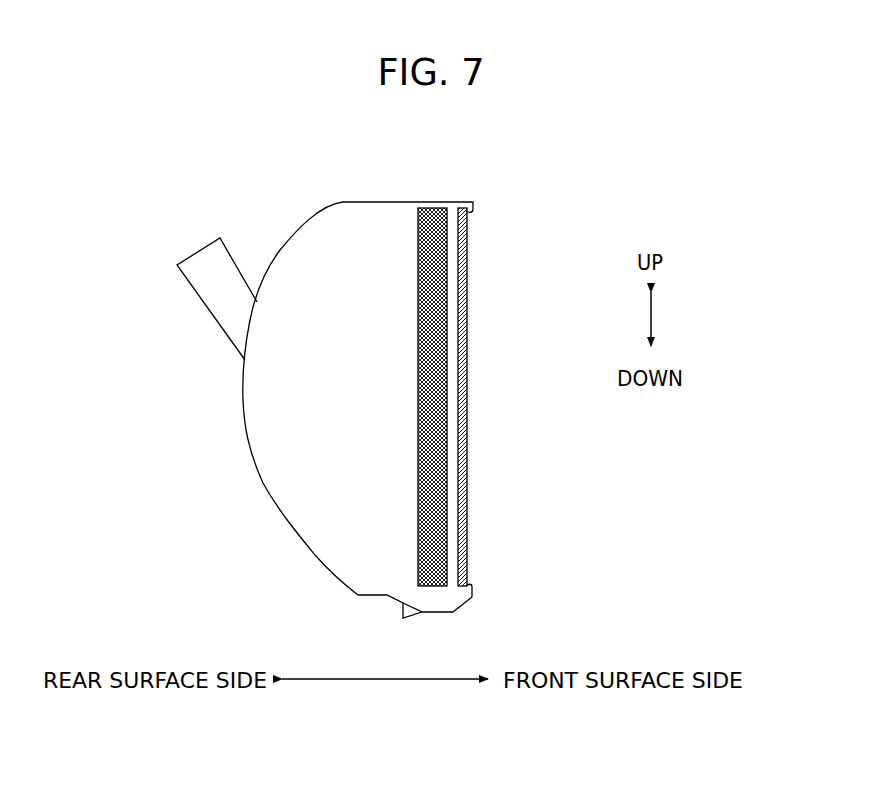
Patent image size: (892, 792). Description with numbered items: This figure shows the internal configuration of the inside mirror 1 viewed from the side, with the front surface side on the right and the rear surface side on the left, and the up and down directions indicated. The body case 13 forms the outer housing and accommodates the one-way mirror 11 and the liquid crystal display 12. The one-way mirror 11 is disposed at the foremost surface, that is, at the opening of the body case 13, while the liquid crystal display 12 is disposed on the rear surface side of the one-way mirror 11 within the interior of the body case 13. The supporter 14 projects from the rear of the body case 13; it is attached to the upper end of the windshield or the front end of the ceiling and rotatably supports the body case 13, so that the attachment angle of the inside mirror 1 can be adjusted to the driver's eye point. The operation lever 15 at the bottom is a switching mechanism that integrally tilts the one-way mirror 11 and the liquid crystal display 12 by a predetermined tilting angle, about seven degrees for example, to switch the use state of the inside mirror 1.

The inside mirror 1 is at (517, 226).
The one-way mirror 11 is at (465, 303).
The liquid crystal display 12 is at (430, 240).
The body case 13 is at (343, 202).
The supporter 14 is at (197, 260).
The operation lever 15 is at (403, 618).